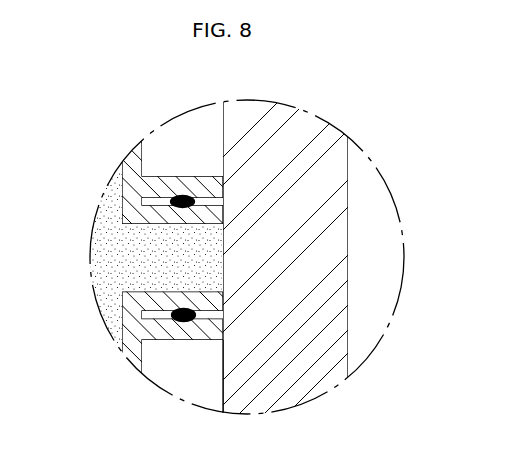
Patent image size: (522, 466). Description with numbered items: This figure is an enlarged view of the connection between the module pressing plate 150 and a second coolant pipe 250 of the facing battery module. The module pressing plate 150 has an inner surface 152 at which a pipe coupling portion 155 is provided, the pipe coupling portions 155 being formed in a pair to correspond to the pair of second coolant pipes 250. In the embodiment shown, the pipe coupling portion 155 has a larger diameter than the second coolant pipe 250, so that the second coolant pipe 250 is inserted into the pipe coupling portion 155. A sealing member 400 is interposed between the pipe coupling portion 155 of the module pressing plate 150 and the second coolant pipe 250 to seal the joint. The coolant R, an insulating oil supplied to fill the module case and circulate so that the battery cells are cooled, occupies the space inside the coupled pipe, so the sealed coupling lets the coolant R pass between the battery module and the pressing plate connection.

The module pressing plate 150 is at (302, 118).
The inner surface 152 is at (222, 378).
The pipe coupling portion 155 is at (192, 333).
The second coolant pipe 250 is at (168, 291).
The sealing member 400 is at (184, 195).
The coolant R is at (100, 221).